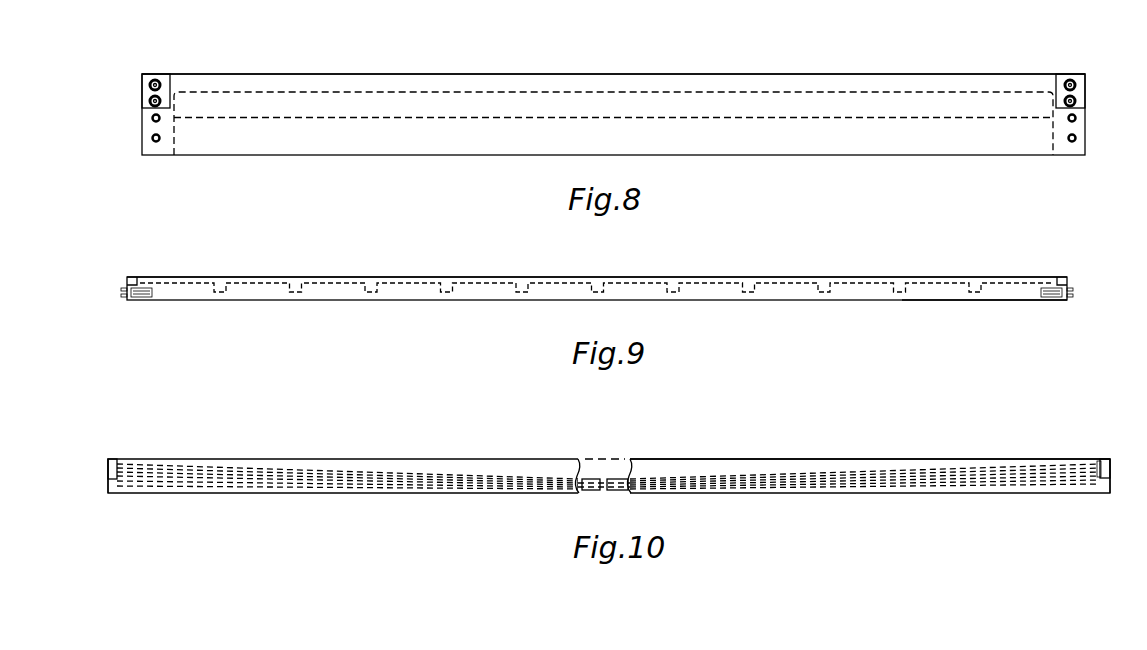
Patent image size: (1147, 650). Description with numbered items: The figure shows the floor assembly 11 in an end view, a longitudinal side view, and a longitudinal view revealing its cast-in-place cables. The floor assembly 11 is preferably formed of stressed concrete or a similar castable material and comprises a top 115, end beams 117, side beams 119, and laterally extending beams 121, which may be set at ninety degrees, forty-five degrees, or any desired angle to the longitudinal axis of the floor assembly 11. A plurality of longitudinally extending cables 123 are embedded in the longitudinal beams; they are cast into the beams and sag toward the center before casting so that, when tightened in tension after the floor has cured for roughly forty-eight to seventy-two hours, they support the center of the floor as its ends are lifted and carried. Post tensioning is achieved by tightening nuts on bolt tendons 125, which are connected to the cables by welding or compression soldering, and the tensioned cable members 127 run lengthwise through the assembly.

In FIG. 8, the floor assembly 11 is at (761, 54).
In FIG. 9, the floor assembly 11 is at (161, 265).
In FIG. 10, the floor assembly 11 is at (421, 447).
In FIG. 8, the top 115 is at (500, 73).
In FIG. 9, the top 115 is at (662, 283).
In FIG. 10, the top 115 is at (665, 459).
In FIG. 8, the end beams 117 is at (860, 130).
In FIG. 9, the side beams 119 is at (925, 293).
In FIG. 9, the laterally extending beams 121 is at (445, 283).
In FIG. 10, the longitudinally extending cables 123 is at (120, 465).
In FIG. 10, the bolt tendons 125 is at (112, 461).
In FIG. 10, the tension member 127 is at (950, 482).